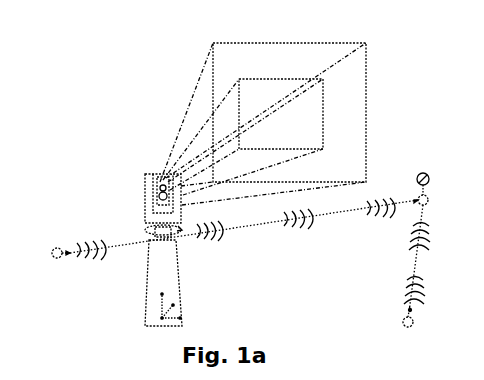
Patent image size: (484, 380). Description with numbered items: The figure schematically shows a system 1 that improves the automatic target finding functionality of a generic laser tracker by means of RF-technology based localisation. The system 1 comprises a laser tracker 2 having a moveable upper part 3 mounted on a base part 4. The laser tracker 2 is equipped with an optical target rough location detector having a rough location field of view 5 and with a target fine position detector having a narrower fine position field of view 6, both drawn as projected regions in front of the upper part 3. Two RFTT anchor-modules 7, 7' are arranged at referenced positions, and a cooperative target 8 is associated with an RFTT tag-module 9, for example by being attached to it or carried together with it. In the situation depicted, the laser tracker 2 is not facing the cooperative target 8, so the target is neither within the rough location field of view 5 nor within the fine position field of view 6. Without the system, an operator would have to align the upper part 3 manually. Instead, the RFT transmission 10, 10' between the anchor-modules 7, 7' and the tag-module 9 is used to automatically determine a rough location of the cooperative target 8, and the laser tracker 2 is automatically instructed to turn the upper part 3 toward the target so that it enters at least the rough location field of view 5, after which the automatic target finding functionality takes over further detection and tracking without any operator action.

The system 1 is at (146, 48).
The laser tracker 2 is at (140, 160).
The moveable upper part 3 is at (145, 210).
The base part 4 is at (153, 285).
The rough location field of view 5 is at (295, 43).
The fine position field of view 6 is at (323, 110).
The RFTT anchor-module 7 is at (41, 236).
The RFTT anchor-module 7' is at (377, 319).
The cooperative target 8 is at (425, 172).
The RFTT tag-module 9 is at (427, 205).
The RFT transmission 10 is at (236, 237).
The RFT transmission 10' is at (380, 264).